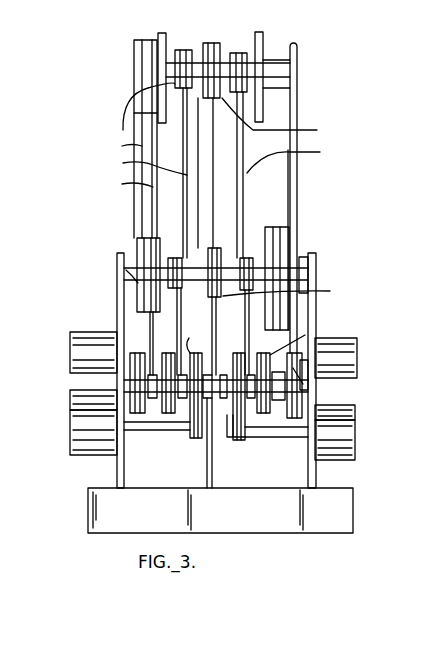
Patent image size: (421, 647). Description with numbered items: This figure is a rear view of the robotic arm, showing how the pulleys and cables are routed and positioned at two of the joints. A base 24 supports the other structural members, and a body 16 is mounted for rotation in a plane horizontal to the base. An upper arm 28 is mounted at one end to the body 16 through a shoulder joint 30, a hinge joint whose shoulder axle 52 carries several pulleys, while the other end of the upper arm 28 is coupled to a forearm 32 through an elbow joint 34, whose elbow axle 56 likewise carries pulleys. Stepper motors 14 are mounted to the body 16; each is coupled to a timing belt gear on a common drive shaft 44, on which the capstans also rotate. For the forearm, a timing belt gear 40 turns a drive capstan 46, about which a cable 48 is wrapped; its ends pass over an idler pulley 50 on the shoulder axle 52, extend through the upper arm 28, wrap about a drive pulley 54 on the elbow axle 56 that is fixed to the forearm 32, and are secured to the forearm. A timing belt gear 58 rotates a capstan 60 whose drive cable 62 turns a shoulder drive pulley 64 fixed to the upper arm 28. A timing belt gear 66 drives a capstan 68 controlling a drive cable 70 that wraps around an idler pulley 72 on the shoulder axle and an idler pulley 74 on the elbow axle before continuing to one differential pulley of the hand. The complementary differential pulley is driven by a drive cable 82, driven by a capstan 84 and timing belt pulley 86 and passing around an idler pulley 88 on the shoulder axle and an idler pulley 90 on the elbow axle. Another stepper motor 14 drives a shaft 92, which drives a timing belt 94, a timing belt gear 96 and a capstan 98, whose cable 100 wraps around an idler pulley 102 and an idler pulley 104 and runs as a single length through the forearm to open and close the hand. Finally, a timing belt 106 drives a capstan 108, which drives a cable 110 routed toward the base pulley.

The stepper motor 14 is at (72, 354).
The body 16 is at (317, 316).
The base 24 is at (90, 508).
The upper arm 28 is at (297, 115).
The shoulder joint 30 is at (322, 272).
The forearm 32 is at (162, 33).
The elbow joint 34 is at (299, 68).
The timing belt gear 40 is at (135, 352).
The common drive shaft 44 is at (306, 391).
The drive capstan 46 is at (158, 398).
The cable 48 is at (126, 184).
The idler pulley 50 is at (143, 247).
The shoulder axle 52 is at (195, 272).
The drive pulley 54 is at (143, 45).
The elbow axle 56 is at (198, 66).
The timing belt gear 58 is at (296, 366).
The capstan 60 is at (283, 418).
The drive cable 62 is at (278, 352).
The shoulder drive pulley 64 is at (268, 227).
The timing belt gear 66 is at (278, 430).
The capstan 68 is at (238, 453).
The drive cable 70 is at (295, 160).
The idler pulley 72 is at (253, 262).
The idler pulley 74 is at (232, 70).
The drive cable 82 is at (143, 164).
The capstan 84 is at (187, 403).
The timing belt pulley 86 is at (162, 357).
The idler pulley 88 is at (138, 283).
The idler pulley 90 is at (136, 111).
The shaft 92 is at (298, 437).
The timing belt 94 is at (238, 442).
The timing belt gear 96 is at (228, 353).
The capstan 98 is at (208, 440).
The cable 100 is at (115, 147).
The idler pulley 102 is at (292, 290).
The idler pulley 104 is at (285, 120).
The timing belt 106 is at (186, 340).
The capstan 108 is at (203, 338).
The cable 110 is at (206, 474).